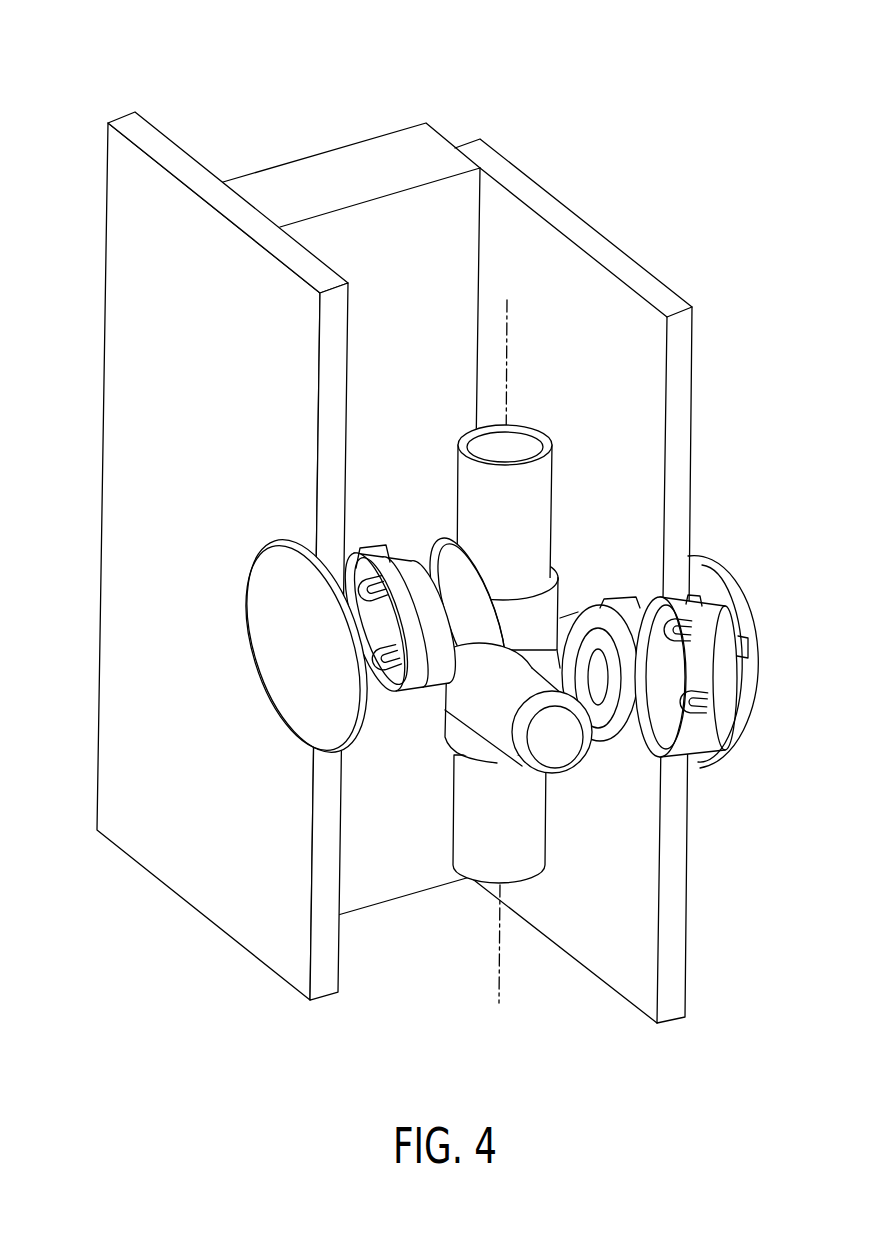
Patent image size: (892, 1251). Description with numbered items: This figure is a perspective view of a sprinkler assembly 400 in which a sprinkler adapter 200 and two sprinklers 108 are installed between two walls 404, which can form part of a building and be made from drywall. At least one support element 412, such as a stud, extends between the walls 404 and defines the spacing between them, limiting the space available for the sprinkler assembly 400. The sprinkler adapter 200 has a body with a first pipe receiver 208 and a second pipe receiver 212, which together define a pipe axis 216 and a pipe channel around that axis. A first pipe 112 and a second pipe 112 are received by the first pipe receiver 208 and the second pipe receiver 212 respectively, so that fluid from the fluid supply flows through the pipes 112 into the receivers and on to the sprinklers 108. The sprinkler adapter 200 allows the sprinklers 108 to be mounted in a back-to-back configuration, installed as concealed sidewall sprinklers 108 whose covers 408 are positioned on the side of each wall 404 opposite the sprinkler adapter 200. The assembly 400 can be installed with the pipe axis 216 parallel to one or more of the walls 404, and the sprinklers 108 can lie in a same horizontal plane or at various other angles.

The sprinkler assembly 400 is at (135, 82).
The wall 404 is at (210, 331).
The support element 412 is at (397, 155).
The pipe axis 216 is at (510, 372).
The pipe 112 is at (525, 528).
The second pipe receiver 212 is at (523, 608).
The sprinkler adapter 200 is at (566, 615).
The first pipe receiver 208 is at (482, 740).
The sprinkler 108 is at (377, 647).
The cover 408 is at (297, 608).